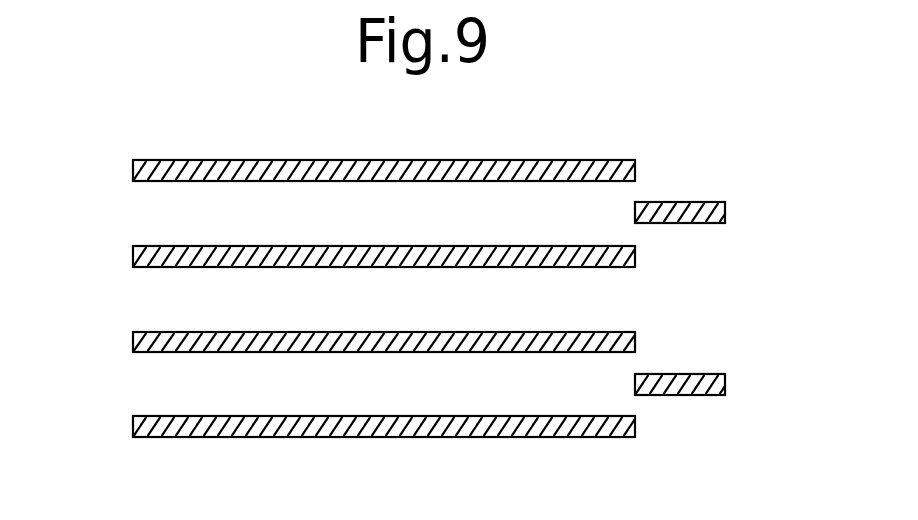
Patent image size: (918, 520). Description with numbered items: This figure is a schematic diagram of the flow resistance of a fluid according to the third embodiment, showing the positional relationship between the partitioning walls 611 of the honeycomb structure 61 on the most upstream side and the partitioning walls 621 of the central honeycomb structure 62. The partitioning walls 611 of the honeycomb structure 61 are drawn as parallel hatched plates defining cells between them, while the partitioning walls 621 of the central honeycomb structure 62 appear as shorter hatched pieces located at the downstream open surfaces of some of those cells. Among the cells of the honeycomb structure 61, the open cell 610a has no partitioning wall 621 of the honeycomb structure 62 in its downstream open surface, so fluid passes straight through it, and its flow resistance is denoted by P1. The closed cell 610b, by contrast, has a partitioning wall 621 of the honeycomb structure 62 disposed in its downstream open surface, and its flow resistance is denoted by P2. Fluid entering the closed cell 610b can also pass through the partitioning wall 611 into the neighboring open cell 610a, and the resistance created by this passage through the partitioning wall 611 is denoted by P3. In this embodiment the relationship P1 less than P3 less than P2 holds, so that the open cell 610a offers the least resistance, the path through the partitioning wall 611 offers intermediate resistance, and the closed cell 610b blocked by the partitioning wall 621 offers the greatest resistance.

The honeycomb structure 61 is at (384, 288).
The partitioning wall 611 is at (262, 168).
The open cell 610a is at (185, 302).
The closed cell 610b is at (358, 203).
The central honeycomb structure 62 is at (727, 295).
The partitioning wall 621 is at (725, 216).
The flow resistance of the open cell P1 is at (595, 300).
The flow resistance of the closed cell P2 is at (670, 359).
The resistance through the partitioning wall P3 is at (428, 297).